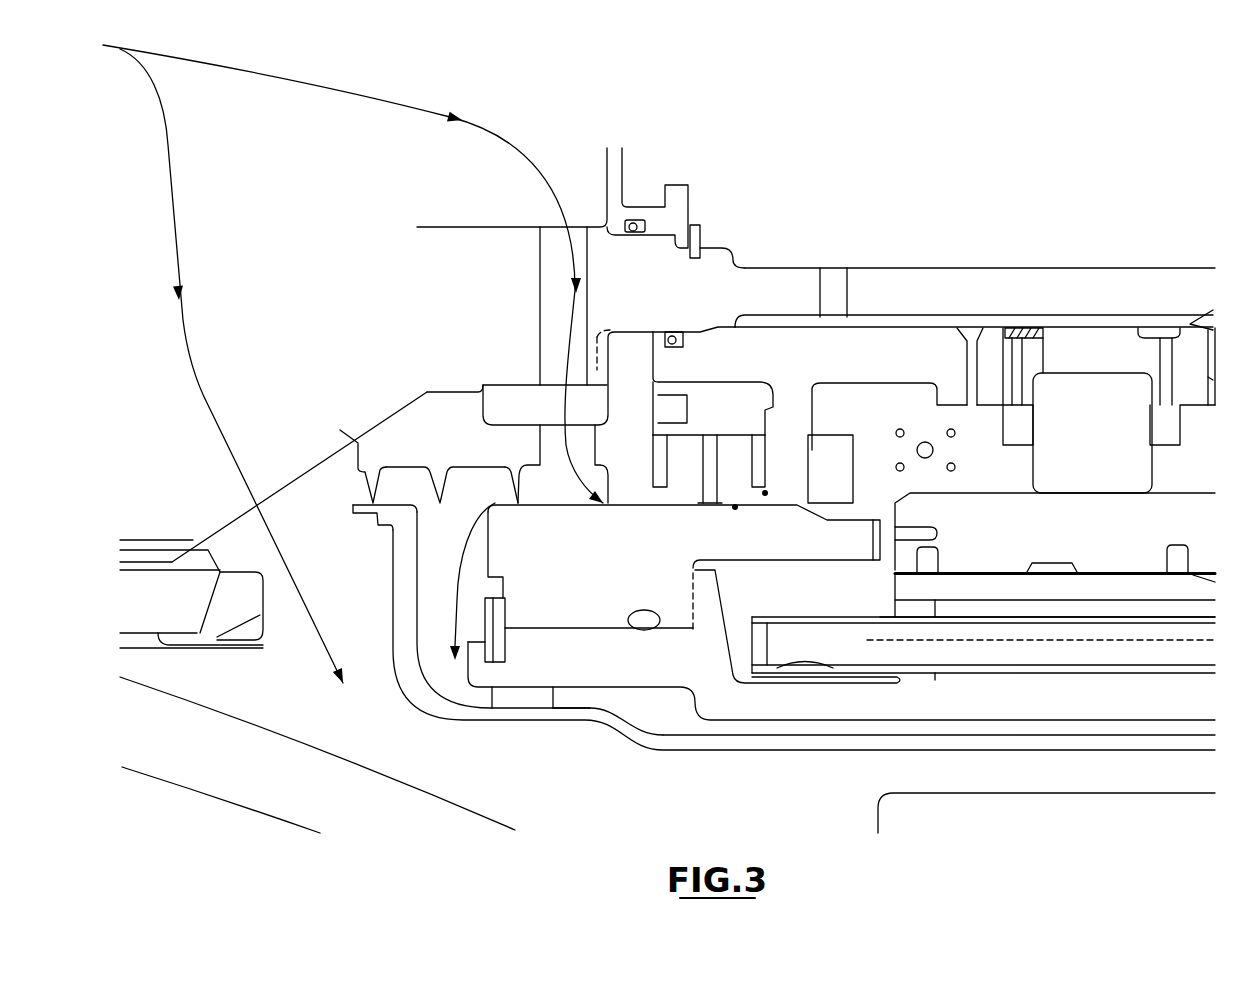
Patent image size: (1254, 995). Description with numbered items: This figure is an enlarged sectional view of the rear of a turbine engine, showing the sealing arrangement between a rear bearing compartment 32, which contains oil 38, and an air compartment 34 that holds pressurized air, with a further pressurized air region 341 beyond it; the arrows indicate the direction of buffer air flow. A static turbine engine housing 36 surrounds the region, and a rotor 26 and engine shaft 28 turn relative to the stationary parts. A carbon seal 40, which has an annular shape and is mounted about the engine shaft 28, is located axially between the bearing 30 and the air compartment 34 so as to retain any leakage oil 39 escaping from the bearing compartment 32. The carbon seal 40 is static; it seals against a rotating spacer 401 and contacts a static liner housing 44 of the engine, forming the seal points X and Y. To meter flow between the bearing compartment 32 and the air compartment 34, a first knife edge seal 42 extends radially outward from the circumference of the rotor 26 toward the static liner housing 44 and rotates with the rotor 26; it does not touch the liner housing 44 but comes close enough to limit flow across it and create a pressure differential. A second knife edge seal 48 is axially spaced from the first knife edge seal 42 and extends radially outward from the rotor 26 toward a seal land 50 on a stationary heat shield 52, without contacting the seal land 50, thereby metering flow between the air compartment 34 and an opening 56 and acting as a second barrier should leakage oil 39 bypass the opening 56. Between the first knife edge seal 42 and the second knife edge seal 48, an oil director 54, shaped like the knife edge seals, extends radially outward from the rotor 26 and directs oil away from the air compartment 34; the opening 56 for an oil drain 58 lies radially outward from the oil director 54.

The rotor 26 is at (343, 356).
The engine shaft 28 is at (928, 235).
The bearing 30 is at (1088, 395).
The rear bearing compartment 32 is at (1195, 417).
The air compartment 34 is at (341, 625).
The turbine engine housing 36 is at (982, 493).
The oil 38 is at (1213, 460).
The leakage oil 39 is at (900, 428).
The carbon seal 40 is at (685, 497).
The rotating spacer 401 is at (818, 347).
The first knife edge seal 42 is at (515, 472).
The static liner housing 44 is at (638, 512).
The second knife edge seal 48 is at (368, 472).
The seal land 50 is at (358, 513).
The heat shield 52 is at (463, 717).
The oil director 54 is at (438, 470).
The opening 56 is at (427, 553).
The oil drain 58 is at (587, 700).
The air compartment 341 is at (282, 77).
The seal point X is at (735, 507).
The seal point Y is at (765, 493).